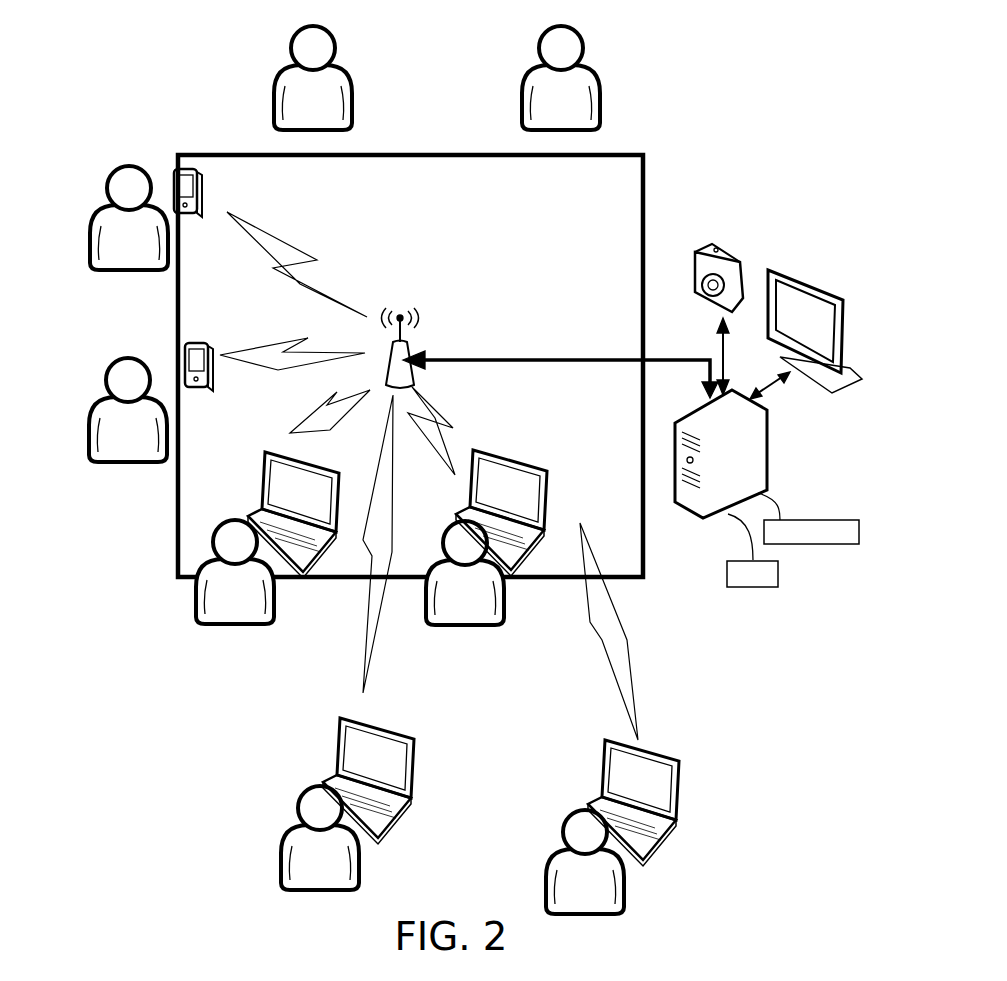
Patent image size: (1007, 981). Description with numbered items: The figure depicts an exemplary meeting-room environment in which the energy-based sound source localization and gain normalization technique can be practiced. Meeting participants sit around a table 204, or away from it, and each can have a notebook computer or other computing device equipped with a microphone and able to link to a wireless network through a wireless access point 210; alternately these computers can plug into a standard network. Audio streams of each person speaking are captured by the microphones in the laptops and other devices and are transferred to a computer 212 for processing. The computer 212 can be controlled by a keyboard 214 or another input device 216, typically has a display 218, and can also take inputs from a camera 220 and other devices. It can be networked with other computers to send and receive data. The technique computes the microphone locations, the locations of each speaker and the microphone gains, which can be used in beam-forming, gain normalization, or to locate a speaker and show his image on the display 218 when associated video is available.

The table 204 is at (400, 153).
The wireless access point 210 is at (410, 345).
The computer 212 is at (768, 444).
The keyboard 214 is at (820, 518).
The other input device 216 is at (778, 575).
The display 218 is at (818, 279).
The camera 220 is at (715, 250).